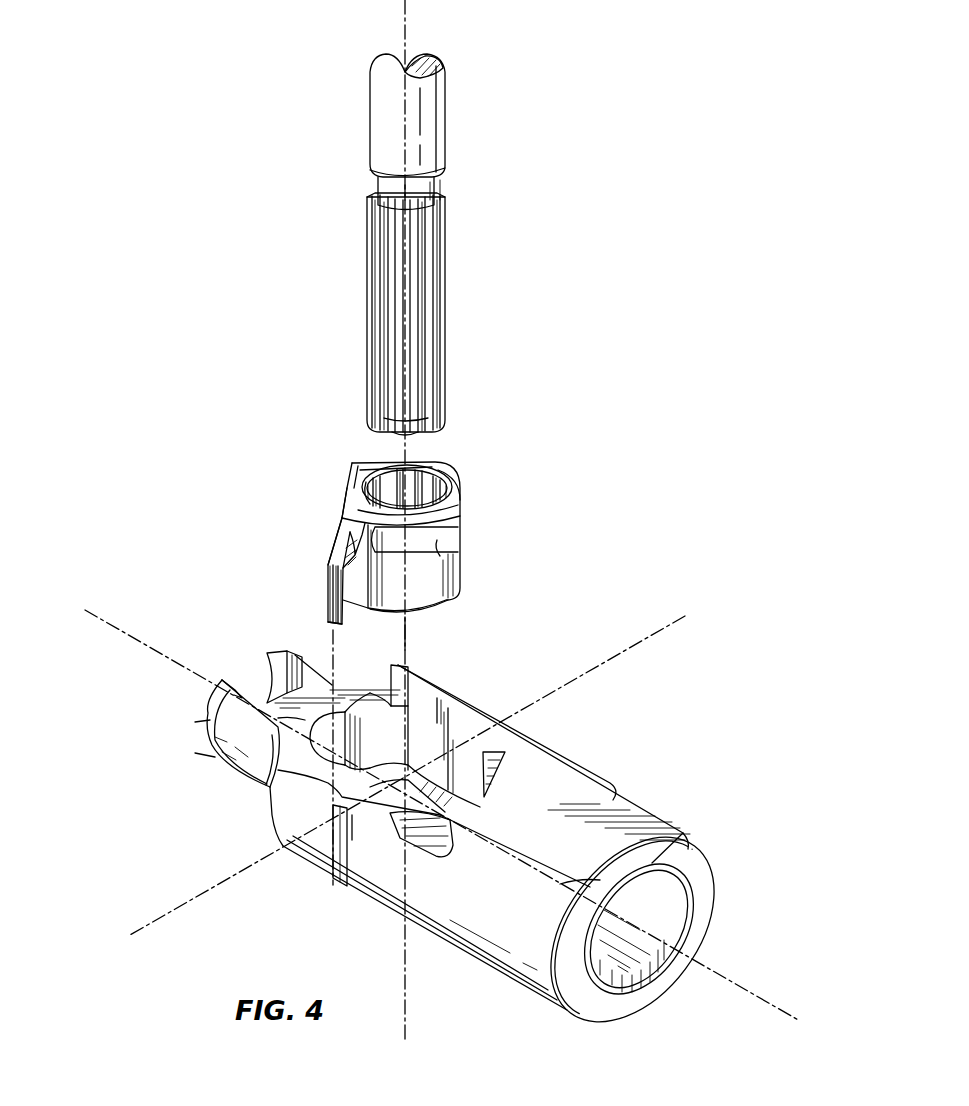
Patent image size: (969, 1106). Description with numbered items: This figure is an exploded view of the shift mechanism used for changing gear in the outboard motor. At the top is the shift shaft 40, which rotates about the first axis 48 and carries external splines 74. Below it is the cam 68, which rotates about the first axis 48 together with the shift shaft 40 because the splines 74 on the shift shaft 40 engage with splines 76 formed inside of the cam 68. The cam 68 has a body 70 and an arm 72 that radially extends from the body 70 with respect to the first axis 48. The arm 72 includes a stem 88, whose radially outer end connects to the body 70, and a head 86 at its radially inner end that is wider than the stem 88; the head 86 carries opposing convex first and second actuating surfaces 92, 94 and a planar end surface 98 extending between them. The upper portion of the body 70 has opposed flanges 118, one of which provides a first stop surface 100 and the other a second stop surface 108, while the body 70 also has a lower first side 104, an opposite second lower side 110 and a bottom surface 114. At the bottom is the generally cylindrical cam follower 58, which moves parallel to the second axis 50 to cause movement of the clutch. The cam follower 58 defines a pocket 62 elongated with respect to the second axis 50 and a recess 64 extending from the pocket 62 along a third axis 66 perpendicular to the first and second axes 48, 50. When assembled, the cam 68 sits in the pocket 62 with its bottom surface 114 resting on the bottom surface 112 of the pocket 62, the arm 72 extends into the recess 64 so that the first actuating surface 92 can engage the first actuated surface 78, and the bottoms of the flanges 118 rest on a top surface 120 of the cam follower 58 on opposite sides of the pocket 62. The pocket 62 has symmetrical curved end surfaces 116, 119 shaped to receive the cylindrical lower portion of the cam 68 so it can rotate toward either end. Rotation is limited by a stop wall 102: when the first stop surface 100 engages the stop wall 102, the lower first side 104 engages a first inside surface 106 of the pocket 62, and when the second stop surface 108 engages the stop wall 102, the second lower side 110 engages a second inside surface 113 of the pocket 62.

The shift shaft 40 is at (447, 122).
The first axis 48 is at (403, 31).
The second axis 50 is at (120, 628).
The cam follower 58 is at (706, 859).
The pocket 62 is at (458, 742).
The recess 64 is at (338, 866).
The third axis 66 is at (645, 646).
The cam 68 is at (403, 637).
The body 70 is at (445, 466).
The arm 72 is at (340, 561).
The splines 74 is at (445, 298).
The splines 76 is at (430, 465).
The first actuated surface 78 is at (305, 831).
The head 86 is at (333, 590).
The stem 88 is at (441, 609).
The first actuating surface 92 is at (328, 560).
The second actuating surface 94 is at (352, 613).
The planar end surface 98 is at (336, 621).
The first stop surface 100 is at (378, 462).
The stop wall 102 is at (470, 745).
The lower first side 104 is at (292, 533).
The first inside surface 106 is at (278, 788).
The second stop surface 108 is at (466, 517).
The second lower side 110 is at (462, 606).
The bottom surface 112 is at (548, 787).
The second inside surface 113 is at (372, 863).
The bottom surface 114 is at (421, 621).
The curved end surface 116 is at (300, 746).
The flanges 118 is at (362, 486).
The curved end surface 119 is at (510, 748).
The top surface 120 is at (448, 838).